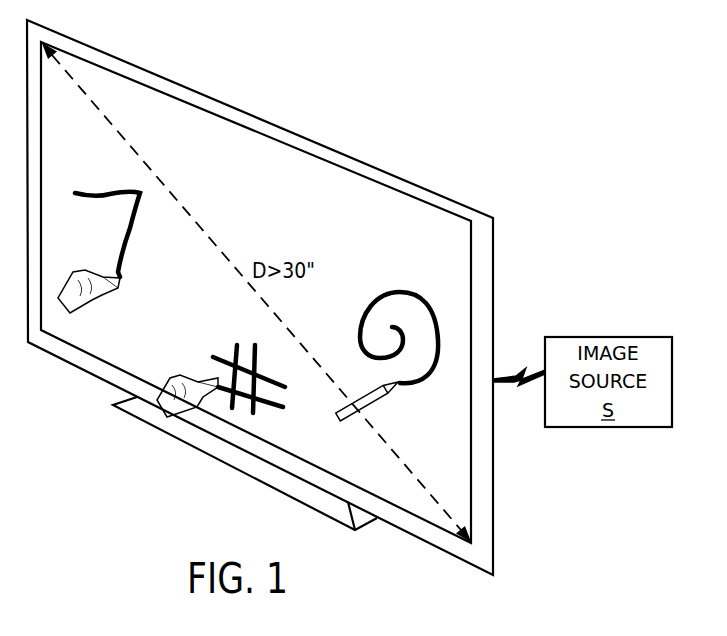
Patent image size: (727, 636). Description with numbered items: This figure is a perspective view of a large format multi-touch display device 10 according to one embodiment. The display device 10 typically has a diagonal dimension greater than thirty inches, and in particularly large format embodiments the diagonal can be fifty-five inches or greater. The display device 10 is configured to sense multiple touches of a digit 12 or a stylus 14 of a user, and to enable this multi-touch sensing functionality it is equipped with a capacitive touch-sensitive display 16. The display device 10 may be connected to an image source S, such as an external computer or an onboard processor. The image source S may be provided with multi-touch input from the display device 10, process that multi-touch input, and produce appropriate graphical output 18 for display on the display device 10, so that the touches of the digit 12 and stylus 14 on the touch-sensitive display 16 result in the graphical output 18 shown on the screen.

The large format multi-touch display device 10 is at (415, 115).
The digit 12 is at (205, 382).
The stylus 14 is at (350, 412).
The capacitive touch-sensitive display 16 is at (455, 249).
The graphical output 18 is at (113, 190).